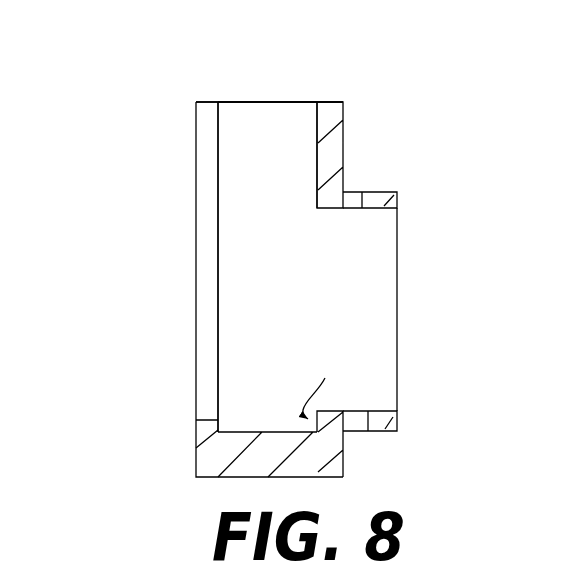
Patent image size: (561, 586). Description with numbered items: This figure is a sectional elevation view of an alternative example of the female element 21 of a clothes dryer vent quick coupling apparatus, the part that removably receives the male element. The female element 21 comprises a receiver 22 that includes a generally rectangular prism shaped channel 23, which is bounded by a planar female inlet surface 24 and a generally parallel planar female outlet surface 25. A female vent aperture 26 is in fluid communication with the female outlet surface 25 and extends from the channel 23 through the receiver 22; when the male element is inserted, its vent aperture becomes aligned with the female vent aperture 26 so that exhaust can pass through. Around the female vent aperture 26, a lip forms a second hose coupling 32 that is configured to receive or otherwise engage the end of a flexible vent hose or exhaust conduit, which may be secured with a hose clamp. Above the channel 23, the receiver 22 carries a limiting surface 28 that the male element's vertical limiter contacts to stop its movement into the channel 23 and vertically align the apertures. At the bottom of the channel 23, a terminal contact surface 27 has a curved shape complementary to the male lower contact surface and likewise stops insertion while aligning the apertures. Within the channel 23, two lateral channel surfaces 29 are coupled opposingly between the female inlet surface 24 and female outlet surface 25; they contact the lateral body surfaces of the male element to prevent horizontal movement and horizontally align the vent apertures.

The female element 21 is at (103, 107).
The receiver 22 is at (328, 157).
The channel 23 is at (252, 208).
The female inlet surface 24 is at (222, 220).
The female outlet surface 25 is at (316, 152).
The female vent aperture 26 is at (378, 295).
The terminal contact surface 27 is at (272, 429).
The limiting surface 28 is at (243, 99).
The lateral channel surface 29 is at (266, 122).
The second hose coupling 32 is at (378, 200).